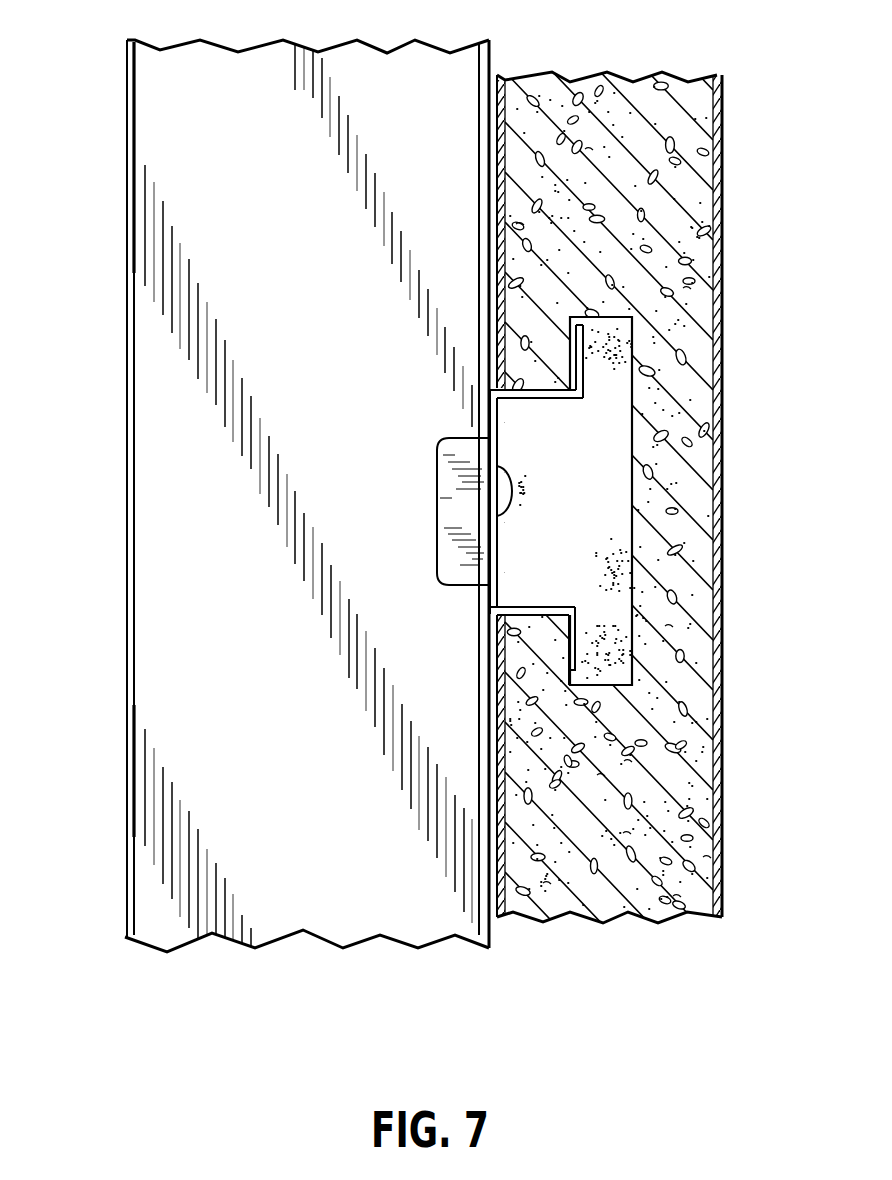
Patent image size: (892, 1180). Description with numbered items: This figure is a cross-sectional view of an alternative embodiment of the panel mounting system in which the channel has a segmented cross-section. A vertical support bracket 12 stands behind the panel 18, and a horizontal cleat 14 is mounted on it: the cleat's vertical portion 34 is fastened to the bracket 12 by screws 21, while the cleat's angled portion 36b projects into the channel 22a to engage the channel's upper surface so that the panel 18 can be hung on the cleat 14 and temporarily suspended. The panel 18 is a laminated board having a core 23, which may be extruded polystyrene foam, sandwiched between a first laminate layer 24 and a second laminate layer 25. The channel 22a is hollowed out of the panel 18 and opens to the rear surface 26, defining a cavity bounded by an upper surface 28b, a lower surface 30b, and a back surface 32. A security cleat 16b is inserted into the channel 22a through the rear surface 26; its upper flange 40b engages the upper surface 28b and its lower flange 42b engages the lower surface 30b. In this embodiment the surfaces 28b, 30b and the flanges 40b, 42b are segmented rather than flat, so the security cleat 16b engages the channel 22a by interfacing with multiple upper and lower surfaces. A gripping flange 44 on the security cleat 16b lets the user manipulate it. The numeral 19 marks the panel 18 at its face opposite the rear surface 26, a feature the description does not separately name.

The vertical support bracket 12 is at (124, 243).
The horizontal cleat 14 is at (585, 505).
The security cleat 16b is at (436, 507).
The panel 18 is at (605, 570).
The exterior surface 19 is at (722, 830).
The screws 21 is at (500, 491).
The gap 22a is at (575, 503).
The core 23 is at (577, 95).
The first laminate layer 24 is at (718, 73).
The second laminate layer 25 is at (503, 73).
The rear surface 26 is at (488, 126).
The upper surface 28b is at (572, 360).
The lower surface 30b is at (576, 653).
The back surface 32 is at (659, 501).
The vertical portion 34 is at (493, 534).
The upper flange 36b is at (583, 402).
The upper flange 40b is at (583, 358).
The lower flange 42b is at (578, 608).
The gripping flange 44 is at (445, 481).